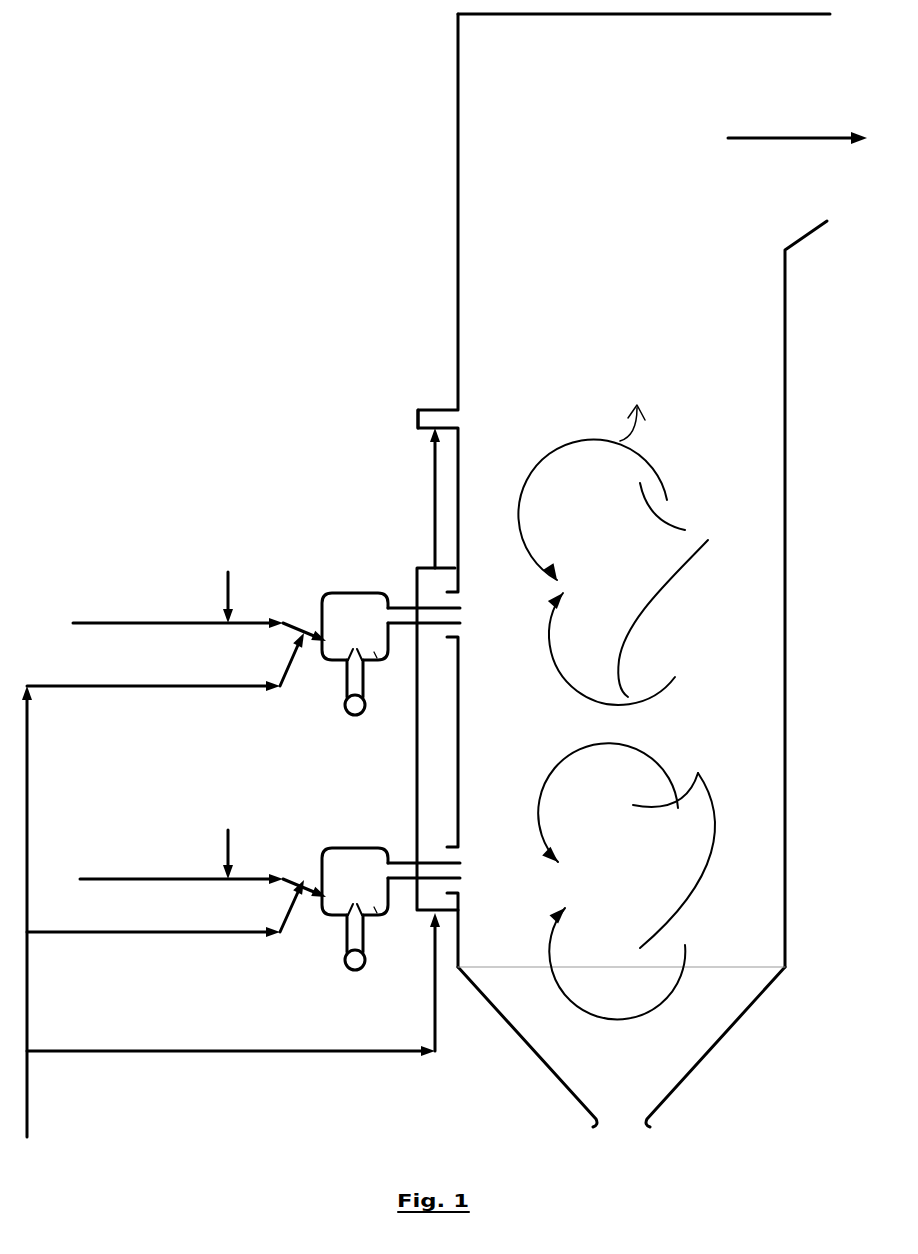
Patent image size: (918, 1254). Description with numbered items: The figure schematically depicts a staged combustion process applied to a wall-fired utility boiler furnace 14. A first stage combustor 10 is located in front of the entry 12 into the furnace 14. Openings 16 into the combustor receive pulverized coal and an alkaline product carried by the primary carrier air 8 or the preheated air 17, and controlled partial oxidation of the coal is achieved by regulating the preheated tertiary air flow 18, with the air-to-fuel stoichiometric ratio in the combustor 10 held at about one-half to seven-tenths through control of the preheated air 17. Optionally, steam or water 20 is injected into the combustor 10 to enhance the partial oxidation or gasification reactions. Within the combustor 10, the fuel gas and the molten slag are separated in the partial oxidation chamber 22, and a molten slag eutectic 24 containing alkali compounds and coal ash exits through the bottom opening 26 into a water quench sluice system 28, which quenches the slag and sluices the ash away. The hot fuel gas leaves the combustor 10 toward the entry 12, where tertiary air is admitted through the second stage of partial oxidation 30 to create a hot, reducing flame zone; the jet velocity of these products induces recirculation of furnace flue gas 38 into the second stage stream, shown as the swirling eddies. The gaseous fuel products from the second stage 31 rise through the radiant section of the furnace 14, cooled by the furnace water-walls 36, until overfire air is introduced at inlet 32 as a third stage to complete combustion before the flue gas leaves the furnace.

The primary carrier air 8 is at (104, 617).
The first stage combustor 10 is at (352, 592).
The entry 12 is at (462, 617).
The furnace 14 is at (587, 738).
The openings 16 is at (322, 636).
The preheated air 17 is at (200, 690).
The tertiary air flow 18 is at (342, 1060).
The steam or water 20 is at (222, 592).
The partial oxidation chamber 22 is at (378, 655).
The molten slag eutectic 24 is at (352, 677).
The bottom opening 26 is at (358, 652).
The water quench sluice system 28 is at (357, 715).
The second stage of partial oxidation 30 is at (467, 600).
The gaseous fuel products from the second stage 31 is at (620, 428).
The overfire air inlet 32 is at (470, 421).
The furnace water-walls 36 is at (465, 508).
The furnace flue gas recirculation 38 is at (616, 729).